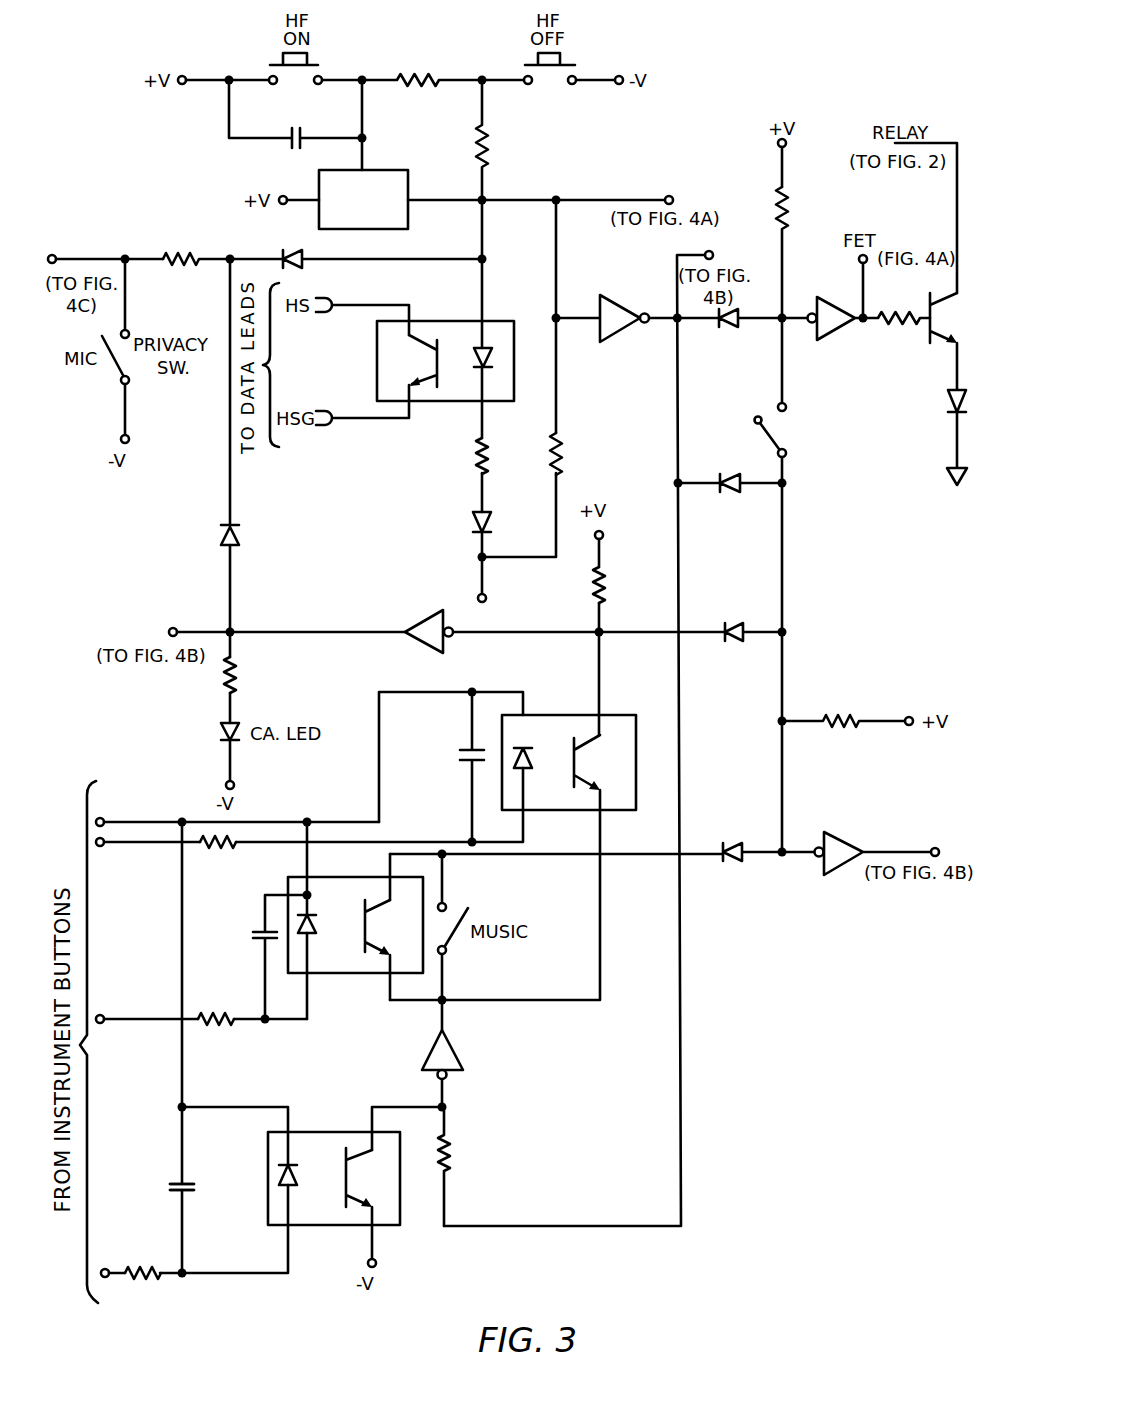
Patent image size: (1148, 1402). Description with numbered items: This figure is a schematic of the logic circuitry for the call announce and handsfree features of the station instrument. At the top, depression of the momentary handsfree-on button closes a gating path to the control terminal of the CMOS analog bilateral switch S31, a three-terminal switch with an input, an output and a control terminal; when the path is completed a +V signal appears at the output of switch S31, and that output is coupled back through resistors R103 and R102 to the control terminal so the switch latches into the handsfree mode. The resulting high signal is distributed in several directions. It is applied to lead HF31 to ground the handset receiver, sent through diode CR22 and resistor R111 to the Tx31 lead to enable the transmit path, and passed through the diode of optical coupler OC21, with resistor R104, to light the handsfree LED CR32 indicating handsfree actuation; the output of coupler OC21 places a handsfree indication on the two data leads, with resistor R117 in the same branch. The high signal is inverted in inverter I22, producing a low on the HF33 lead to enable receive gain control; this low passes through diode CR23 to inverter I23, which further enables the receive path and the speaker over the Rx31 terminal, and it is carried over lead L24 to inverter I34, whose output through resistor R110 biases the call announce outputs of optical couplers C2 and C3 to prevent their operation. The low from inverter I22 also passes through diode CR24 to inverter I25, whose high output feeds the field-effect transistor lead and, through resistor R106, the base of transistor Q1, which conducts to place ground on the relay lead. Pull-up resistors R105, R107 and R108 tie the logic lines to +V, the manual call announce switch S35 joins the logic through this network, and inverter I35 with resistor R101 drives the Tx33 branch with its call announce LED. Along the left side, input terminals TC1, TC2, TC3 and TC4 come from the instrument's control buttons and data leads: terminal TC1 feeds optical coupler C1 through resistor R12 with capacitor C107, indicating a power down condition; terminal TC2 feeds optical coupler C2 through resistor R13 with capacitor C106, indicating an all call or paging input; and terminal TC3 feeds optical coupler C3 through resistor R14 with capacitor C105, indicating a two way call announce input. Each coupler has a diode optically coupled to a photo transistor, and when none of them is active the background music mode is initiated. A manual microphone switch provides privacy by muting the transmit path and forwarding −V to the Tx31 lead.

The resistor R102 is at (422, 67).
The resistor R103 is at (508, 140).
The CMOS analog bilateral switch S31 is at (386, 170).
The lead HF31 is at (666, 189).
The Tx 31 lead Tx31 is at (71, 249).
The resistor R111 is at (195, 248).
The diode CR22 is at (356, 251).
The resistor R101 is at (258, 675).
The optical coupler OC21 is at (491, 322).
The resistor R104 is at (454, 456).
The HF LED CR32 is at (453, 523).
The resistor R117 is at (582, 454).
The inverter I22 is at (616, 330).
The diode CR24 is at (729, 331).
The HF 33 lead HF33 is at (706, 244).
The lead L24 is at (681, 1093).
The inverter I25 is at (836, 330).
The resistor R106 is at (896, 330).
The transistor Q1 is at (950, 318).
The resistor R105 is at (808, 208).
The CA switch S35 is at (810, 430).
The diode CR23 is at (730, 495).
The resistor R107 is at (624, 585).
The Tx 33 lead Tx33 is at (140, 632).
The inverter I35 is at (428, 643).
The resistor R108 is at (843, 710).
The inverter I23 is at (873, 840).
The Rx 31 terminal Rx31 is at (930, 842).
The capacitor C105 is at (446, 767).
The optical coupler C3 is at (545, 715).
The input terminal TC4 is at (111, 810).
The input terminal TC3 is at (111, 855).
The resistor R14 is at (216, 854).
The capacitor C107 is at (160, 1187).
The optical coupler C2 is at (345, 975).
The capacitor C106 is at (255, 957).
The input terminal TC2 is at (111, 1007).
The resistor R13 is at (215, 1032).
The inverter I34 is at (460, 1068).
The optical coupler C1 is at (315, 1132).
The resistor R110 is at (470, 1166).
The input terminal TC1 is at (111, 1262).
The resistor R12 is at (142, 1286).